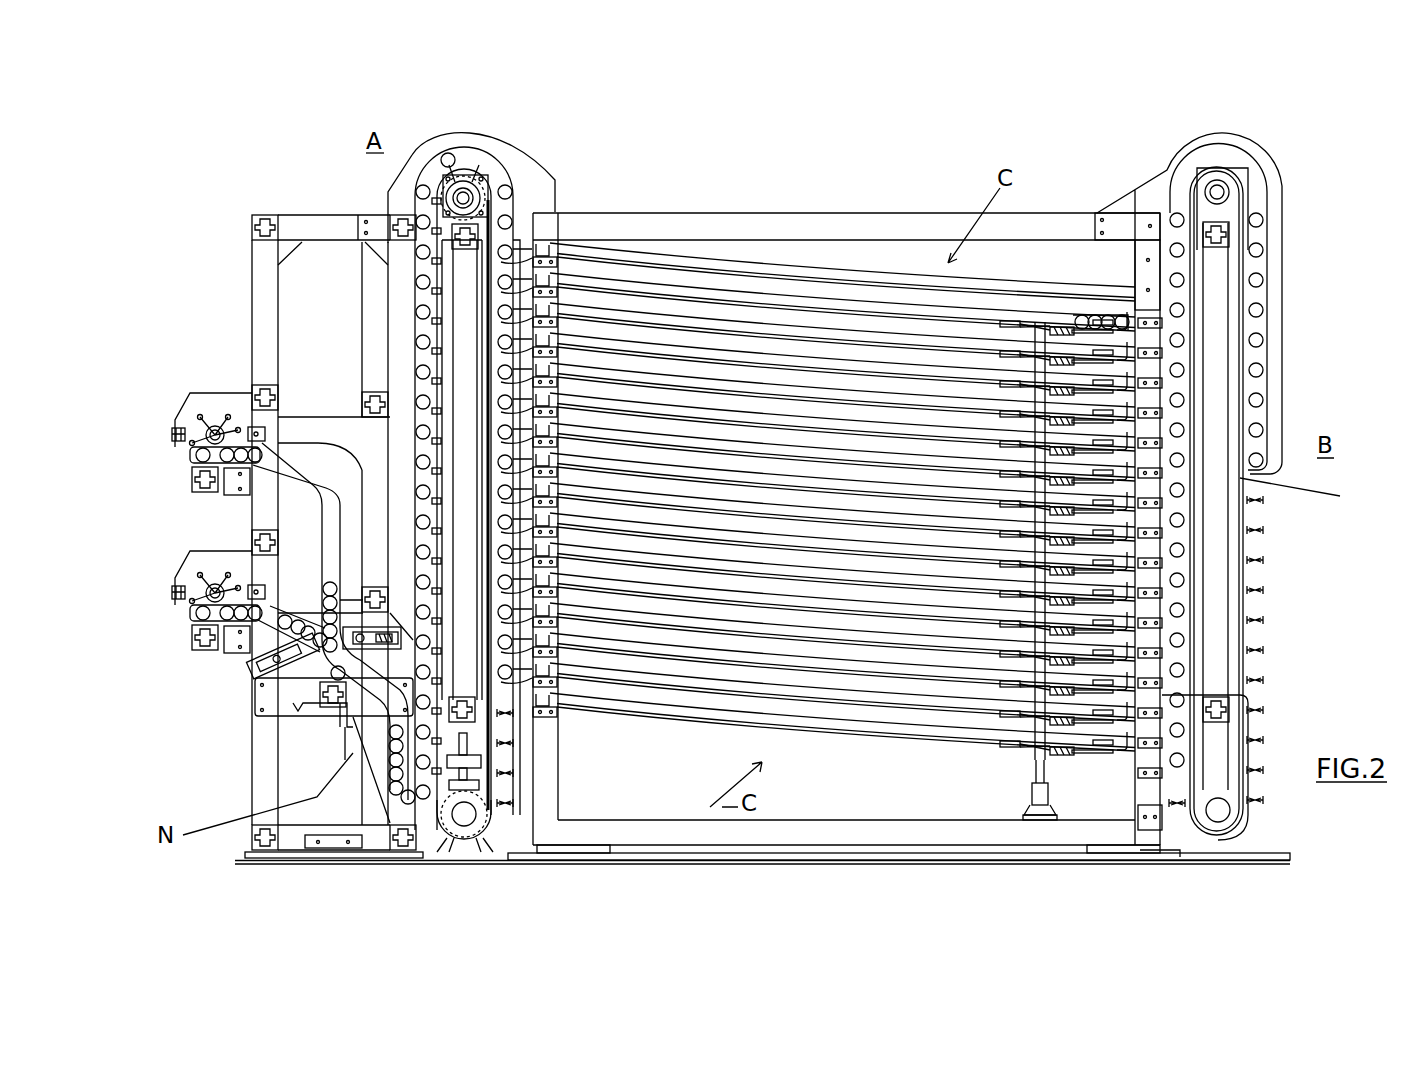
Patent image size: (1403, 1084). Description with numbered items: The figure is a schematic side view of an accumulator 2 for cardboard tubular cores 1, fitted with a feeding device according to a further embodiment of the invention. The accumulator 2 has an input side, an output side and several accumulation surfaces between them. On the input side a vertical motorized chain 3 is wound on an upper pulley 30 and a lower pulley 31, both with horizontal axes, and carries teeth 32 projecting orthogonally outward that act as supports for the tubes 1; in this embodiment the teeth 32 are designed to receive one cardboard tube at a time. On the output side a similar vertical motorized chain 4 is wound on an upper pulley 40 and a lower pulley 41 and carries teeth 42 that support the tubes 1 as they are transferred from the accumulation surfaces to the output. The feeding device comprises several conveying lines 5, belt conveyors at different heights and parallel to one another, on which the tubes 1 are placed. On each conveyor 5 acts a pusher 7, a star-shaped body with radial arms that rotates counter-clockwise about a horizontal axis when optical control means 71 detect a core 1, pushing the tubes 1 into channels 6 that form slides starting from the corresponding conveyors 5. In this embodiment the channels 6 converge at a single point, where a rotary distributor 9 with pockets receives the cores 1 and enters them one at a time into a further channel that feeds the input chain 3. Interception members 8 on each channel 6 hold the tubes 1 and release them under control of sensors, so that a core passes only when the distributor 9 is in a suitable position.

The cardboard tubular core 1 is at (508, 189).
The accumulator 2 is at (775, 225).
The vertical motorized chain 3 is at (494, 760).
The vertical motorized chain 4 is at (1233, 548).
The conveying line 5 is at (193, 466).
The channel 6 is at (303, 462).
The pusher 7 is at (197, 414).
The interception member 8 is at (362, 627).
The rotary distributor 9 is at (337, 720).
The upper pulley 30 is at (458, 193).
The lower pulley 31 is at (463, 838).
The teeth 32 is at (513, 805).
The upper pulley 40 is at (1212, 190).
The lower pulley 41 is at (1219, 811).
The teeth 42 is at (1262, 682).
The optical control means 71 is at (261, 432).